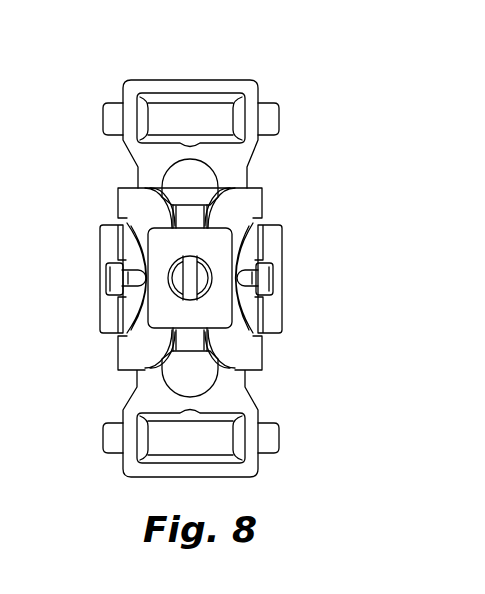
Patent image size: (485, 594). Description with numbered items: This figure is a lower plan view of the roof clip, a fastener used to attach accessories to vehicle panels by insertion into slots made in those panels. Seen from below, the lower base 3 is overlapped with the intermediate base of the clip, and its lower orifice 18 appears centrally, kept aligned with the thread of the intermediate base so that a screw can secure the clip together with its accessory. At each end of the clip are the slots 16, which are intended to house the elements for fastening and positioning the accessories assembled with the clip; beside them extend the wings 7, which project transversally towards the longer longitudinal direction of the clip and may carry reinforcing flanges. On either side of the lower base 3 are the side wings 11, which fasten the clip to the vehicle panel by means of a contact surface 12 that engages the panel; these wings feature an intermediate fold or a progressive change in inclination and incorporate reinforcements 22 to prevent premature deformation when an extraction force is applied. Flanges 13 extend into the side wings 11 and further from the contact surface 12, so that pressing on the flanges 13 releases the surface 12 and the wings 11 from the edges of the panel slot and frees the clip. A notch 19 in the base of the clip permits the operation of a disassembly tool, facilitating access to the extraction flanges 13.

The slots 16 is at (180, 183).
The wings 7 is at (150, 400).
The lower base 3 is at (189, 278).
The lower orifice 18 is at (187, 277).
The notch 19 is at (145, 262).
The side wings 11 is at (242, 247).
The contact surface 12 is at (275, 312).
The flanges 13 is at (105, 282).
The reinforcements 22 is at (263, 277).